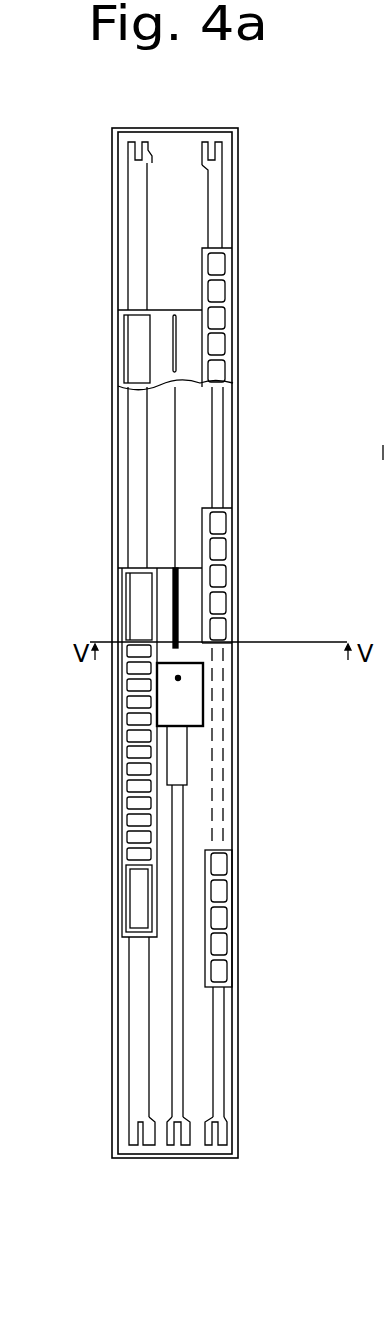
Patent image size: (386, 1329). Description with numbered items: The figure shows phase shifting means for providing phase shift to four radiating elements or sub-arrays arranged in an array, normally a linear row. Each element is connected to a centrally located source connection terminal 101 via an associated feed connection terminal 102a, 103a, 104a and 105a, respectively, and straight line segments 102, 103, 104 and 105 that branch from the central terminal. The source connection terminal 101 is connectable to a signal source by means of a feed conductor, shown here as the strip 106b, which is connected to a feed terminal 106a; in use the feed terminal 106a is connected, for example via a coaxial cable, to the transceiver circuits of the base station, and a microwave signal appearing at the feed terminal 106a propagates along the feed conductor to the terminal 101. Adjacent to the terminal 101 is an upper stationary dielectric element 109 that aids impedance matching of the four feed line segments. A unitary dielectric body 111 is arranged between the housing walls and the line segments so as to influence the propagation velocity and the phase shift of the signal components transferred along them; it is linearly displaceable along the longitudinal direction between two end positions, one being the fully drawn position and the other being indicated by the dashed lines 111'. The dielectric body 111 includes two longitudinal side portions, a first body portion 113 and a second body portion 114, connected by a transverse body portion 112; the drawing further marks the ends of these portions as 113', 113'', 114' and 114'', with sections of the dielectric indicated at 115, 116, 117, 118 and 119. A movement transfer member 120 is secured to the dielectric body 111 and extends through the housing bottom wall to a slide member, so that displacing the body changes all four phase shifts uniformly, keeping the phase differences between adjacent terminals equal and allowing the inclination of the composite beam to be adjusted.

The source connection terminal 101 is at (178, 678).
The straight line segment 102 is at (123, 268).
The feed connection terminal 102a is at (130, 152).
The straight line segment 103 is at (218, 232).
The feed connection terminal 103a is at (220, 157).
The straight line segment 104 is at (137, 987).
The feed connection terminal 104a is at (135, 1133).
The straight line segment 105 is at (220, 1033).
The feed connection terminal 105a is at (222, 1130).
The feed terminal 106a is at (185, 1130).
The fifth conductor strip 106b is at (180, 1048).
The upper stationary dielectric element 109 is at (177, 713).
The dielectric body 111 is at (228, 490).
The dielectric body end position 111' is at (255, 317).
The transverse body portion 112 is at (193, 647).
The first body portion 113 is at (93, 754).
The upper heater column end 113' is at (89, 604).
The lower heater column end 113'' is at (89, 901).
The second body portion 114 is at (274, 747).
The upper sensor column 114' is at (272, 575).
The lower sensor column 114'' is at (277, 918).
The heater element 115 is at (135, 803).
The upper pad 116 is at (138, 603).
The lower pad 117 is at (137, 880).
The sensor element 118 is at (218, 600).
The lower sensor element 119 is at (220, 940).
The movement transfer member 120 is at (175, 600).